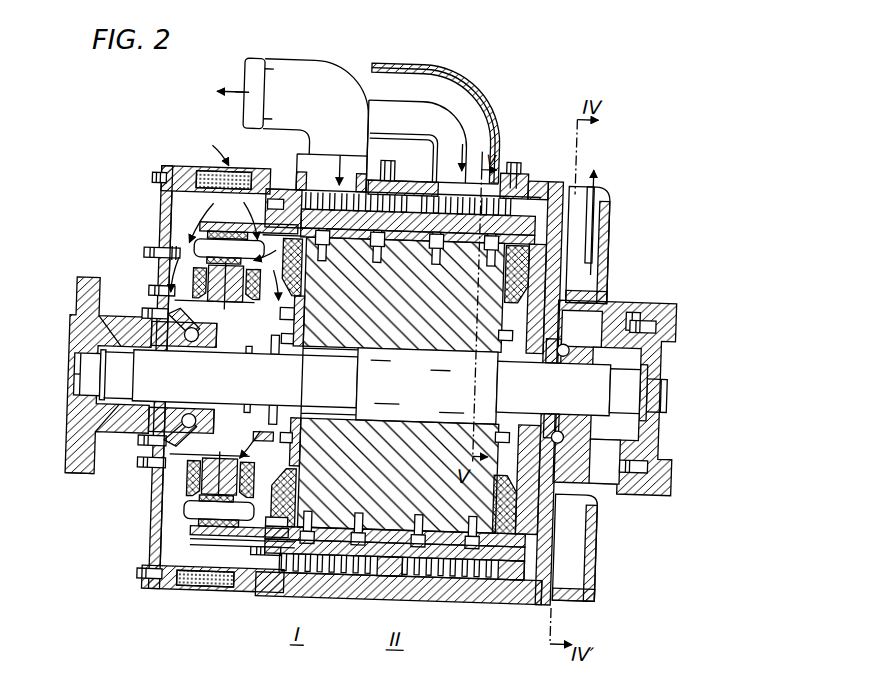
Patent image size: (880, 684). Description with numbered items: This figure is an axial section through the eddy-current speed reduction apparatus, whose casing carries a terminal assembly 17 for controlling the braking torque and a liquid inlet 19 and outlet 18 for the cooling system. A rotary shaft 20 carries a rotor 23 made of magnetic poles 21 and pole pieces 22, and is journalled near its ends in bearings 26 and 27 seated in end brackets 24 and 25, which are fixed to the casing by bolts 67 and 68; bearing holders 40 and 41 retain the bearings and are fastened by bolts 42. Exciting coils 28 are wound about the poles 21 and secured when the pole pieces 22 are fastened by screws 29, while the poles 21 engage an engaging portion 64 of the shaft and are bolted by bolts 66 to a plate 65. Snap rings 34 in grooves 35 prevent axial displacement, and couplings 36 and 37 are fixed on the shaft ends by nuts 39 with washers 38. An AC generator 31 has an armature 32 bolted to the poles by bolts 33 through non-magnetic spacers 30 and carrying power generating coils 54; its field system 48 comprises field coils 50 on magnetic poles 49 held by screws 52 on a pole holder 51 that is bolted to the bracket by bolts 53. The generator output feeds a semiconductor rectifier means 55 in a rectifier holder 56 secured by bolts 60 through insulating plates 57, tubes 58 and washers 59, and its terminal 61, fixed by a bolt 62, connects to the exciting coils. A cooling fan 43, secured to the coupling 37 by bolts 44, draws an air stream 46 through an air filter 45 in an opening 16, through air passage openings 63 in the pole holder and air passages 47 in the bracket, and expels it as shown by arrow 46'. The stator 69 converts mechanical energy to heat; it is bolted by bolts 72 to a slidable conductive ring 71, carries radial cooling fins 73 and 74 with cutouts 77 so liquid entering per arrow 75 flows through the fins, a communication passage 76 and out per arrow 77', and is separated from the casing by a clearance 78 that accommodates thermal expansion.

The opening 16 is at (205, 185).
The terminal assembly 17 is at (156, 252).
The outlet 18 is at (314, 64).
The inlet 19 is at (386, 64).
The rotary shaft 20 is at (407, 390).
The magnetic poles 21 is at (392, 479).
The pole pieces 22 is at (520, 601).
The rotor 23 is at (395, 595).
The end bracket 24 is at (155, 495).
The end bracket 25 is at (596, 552).
The bearing 26 is at (175, 378).
The bearing 27 is at (598, 490).
The exciting coils 28 is at (296, 560).
The screws 29 is at (314, 578).
The spacers 30 is at (250, 556).
The AC generator 31 is at (200, 594).
The armature 32 is at (228, 554).
The bolts 33 is at (150, 585).
The snap rings 34 is at (553, 430).
The grooves 35 is at (548, 385).
The coupling 36 is at (72, 484).
The coupling 37 is at (665, 296).
The washers 38 is at (100, 405).
The nuts 39 is at (76, 368).
The bearing holder 40 is at (140, 322).
The bearing holder 41 is at (628, 306).
The bolts 42 is at (148, 298).
The cooling fan 43 is at (604, 204).
The bolts 44 is at (654, 320).
The air filter 45 is at (238, 176).
The air stream 46 is at (197, 128).
The arrow 46' is at (615, 215).
The air passages 47 is at (506, 282).
The field system 48 is at (188, 517).
The magnetic poles 49 is at (160, 588).
The field coils 50 is at (168, 472).
The magnetic pole holder 51 is at (208, 418).
The screws 52 is at (224, 418).
The bolts 53 is at (148, 448).
The power generating coils 54 is at (195, 540).
The semiconductor rectifier means 55 is at (262, 446).
The rectifier holder 56 is at (300, 482).
The plates 57 is at (310, 450).
The tubes 58 is at (312, 430).
The washers 59 is at (276, 410).
The bolts 60 is at (251, 418).
The terminal 61 is at (278, 331).
The bolt 62 is at (300, 325).
The air passage openings 63 is at (150, 262).
The engaging portion 64 is at (320, 360).
The plate 65 is at (497, 332).
The bolts 66 is at (504, 440).
The bolts 67 is at (150, 181).
The bolts 68 is at (548, 180).
The stator 69 is at (496, 170).
The conductive ring 71 is at (284, 194).
The bolts 72 is at (262, 205).
The cooling fins 73 is at (336, 158).
The cooling fins 74 is at (388, 170).
The arrow 75 is at (450, 70).
The communication passage 76 is at (398, 580).
The cutouts 77 is at (278, 138).
The arrow 77' is at (221, 72).
The clearance 78 is at (514, 171).